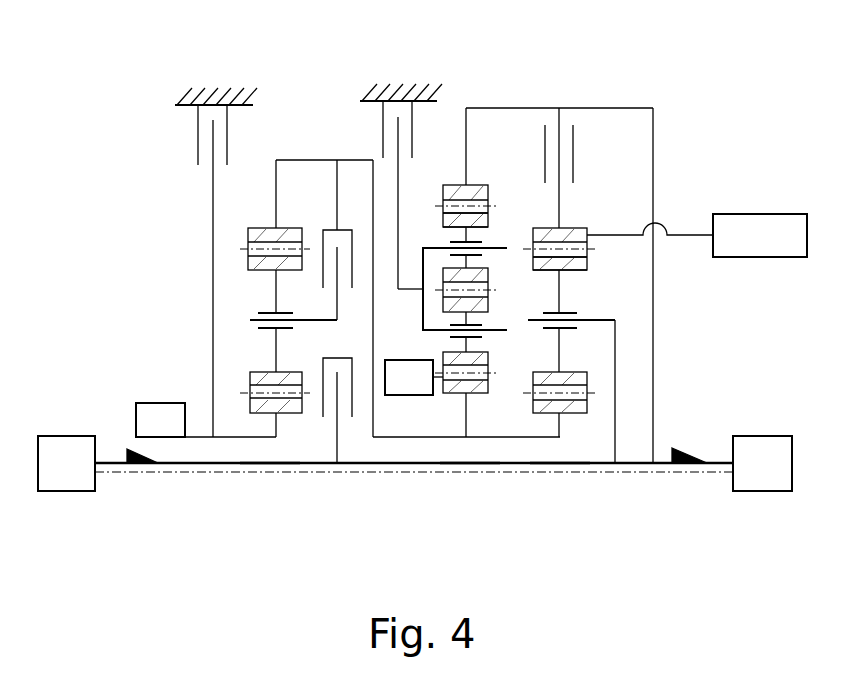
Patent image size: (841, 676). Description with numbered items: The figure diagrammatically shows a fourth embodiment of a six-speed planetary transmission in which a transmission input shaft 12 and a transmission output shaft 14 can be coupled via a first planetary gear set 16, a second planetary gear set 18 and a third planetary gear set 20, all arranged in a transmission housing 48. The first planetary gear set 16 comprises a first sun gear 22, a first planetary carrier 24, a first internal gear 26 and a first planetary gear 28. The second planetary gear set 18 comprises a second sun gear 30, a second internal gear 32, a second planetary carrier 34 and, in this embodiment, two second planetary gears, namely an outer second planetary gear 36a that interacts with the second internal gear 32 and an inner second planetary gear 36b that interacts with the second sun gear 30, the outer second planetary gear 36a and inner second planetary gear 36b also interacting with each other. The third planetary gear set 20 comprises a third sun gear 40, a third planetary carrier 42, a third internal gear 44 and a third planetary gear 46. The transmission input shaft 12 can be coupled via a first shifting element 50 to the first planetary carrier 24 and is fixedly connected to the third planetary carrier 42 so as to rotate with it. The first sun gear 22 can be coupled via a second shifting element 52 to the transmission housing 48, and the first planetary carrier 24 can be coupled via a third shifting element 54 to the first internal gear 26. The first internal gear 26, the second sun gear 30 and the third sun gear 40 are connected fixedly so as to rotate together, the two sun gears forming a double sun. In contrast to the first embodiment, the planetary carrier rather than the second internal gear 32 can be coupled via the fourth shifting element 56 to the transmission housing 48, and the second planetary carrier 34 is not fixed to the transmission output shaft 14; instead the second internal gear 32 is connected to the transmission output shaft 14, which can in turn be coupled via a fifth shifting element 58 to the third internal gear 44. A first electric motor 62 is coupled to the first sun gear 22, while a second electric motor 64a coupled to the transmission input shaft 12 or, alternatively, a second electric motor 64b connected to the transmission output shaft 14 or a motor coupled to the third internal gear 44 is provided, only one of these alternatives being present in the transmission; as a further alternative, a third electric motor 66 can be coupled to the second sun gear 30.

The transmission input shaft 12 is at (140, 463).
The transmission output shaft 14 is at (677, 455).
The first planetary gear set 16 is at (268, 484).
The second planetary gear set 18 is at (474, 482).
The third planetary gear set 20 is at (560, 484).
The first sun gear 22 is at (234, 440).
The first planetary carrier 24 is at (318, 322).
The first internal gear 26 is at (264, 222).
The first planetary gear 28 is at (250, 262).
The second sun gear 30 is at (462, 420).
The second internal gear 32 is at (470, 195).
The second planetary carrier 34 is at (440, 245).
The outer second planetary gear 36a is at (480, 222).
The inner second planetary gear 36b is at (480, 363).
The third sun gear 40 is at (555, 427).
The third planetary carrier 42 is at (603, 320).
The third internal gear 44 is at (578, 232).
The third planetary gear 46 is at (585, 263).
The transmission housing 48 is at (211, 100).
The first shifting element 50 is at (325, 430).
The second shifting element 52 is at (168, 137).
The third shifting element 54 is at (323, 216).
The fourth shifting element 56 is at (375, 122).
The fifth shifting element 58 is at (578, 138).
The first electric motor 62 is at (160, 420).
The second electric motor 64a is at (66, 463).
The second electric motor 64b is at (762, 463).
The third electric motor 66 is at (414, 377).